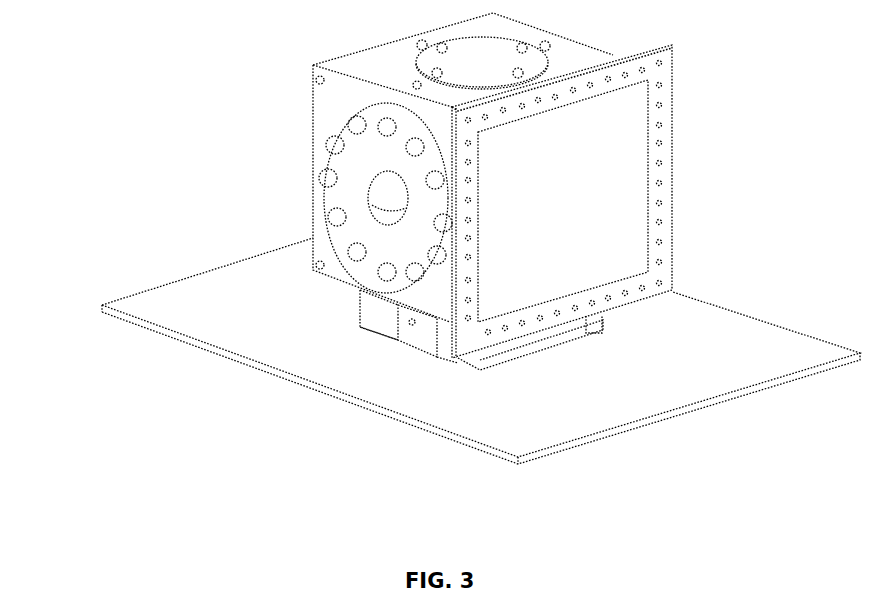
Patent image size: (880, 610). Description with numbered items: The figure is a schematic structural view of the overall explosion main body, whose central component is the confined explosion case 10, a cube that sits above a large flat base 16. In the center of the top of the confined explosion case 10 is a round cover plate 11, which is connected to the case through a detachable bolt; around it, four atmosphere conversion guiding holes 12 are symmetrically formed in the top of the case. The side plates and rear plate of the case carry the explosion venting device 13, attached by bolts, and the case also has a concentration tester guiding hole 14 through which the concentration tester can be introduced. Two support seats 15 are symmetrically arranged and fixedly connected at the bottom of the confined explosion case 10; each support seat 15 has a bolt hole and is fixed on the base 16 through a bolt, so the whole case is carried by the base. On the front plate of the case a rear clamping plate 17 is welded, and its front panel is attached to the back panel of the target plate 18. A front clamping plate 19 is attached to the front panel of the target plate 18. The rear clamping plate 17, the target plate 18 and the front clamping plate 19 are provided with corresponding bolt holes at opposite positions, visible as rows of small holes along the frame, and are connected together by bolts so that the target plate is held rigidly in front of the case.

The confined explosion case 10 is at (311, 176).
The cover plate 11 is at (427, 56).
The atmosphere conversion guiding hole 12 is at (418, 87).
The explosion venting device 13 is at (330, 198).
The concentration tester guiding hole 14 is at (316, 266).
The support seat 15 is at (385, 321).
The base 16 is at (350, 374).
The rear clamping plate 17 is at (672, 46).
The target plate 18 is at (628, 175).
The front clamping plate 19 is at (673, 287).